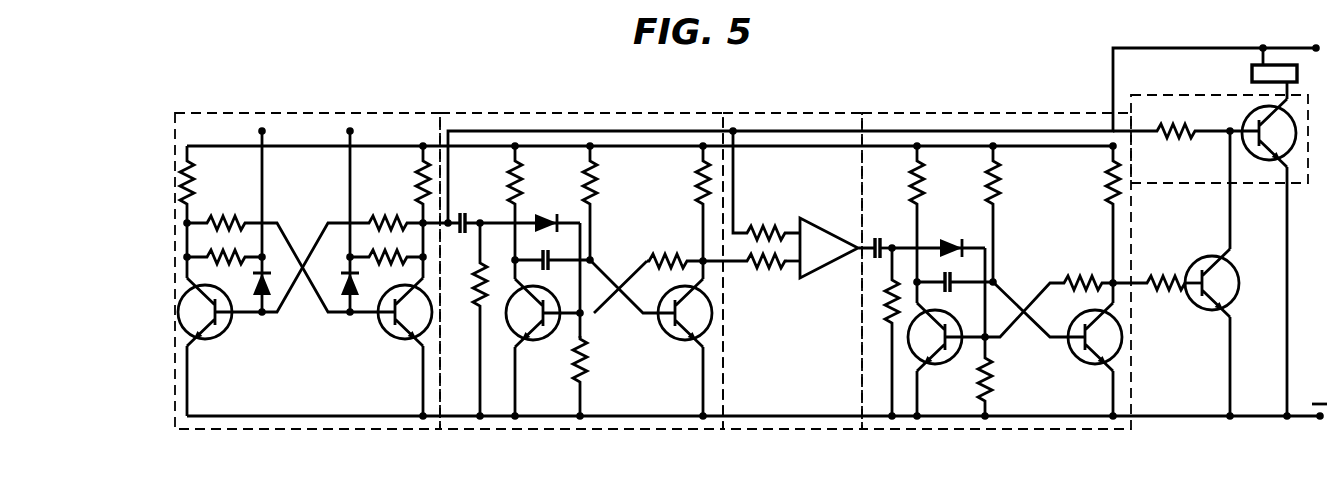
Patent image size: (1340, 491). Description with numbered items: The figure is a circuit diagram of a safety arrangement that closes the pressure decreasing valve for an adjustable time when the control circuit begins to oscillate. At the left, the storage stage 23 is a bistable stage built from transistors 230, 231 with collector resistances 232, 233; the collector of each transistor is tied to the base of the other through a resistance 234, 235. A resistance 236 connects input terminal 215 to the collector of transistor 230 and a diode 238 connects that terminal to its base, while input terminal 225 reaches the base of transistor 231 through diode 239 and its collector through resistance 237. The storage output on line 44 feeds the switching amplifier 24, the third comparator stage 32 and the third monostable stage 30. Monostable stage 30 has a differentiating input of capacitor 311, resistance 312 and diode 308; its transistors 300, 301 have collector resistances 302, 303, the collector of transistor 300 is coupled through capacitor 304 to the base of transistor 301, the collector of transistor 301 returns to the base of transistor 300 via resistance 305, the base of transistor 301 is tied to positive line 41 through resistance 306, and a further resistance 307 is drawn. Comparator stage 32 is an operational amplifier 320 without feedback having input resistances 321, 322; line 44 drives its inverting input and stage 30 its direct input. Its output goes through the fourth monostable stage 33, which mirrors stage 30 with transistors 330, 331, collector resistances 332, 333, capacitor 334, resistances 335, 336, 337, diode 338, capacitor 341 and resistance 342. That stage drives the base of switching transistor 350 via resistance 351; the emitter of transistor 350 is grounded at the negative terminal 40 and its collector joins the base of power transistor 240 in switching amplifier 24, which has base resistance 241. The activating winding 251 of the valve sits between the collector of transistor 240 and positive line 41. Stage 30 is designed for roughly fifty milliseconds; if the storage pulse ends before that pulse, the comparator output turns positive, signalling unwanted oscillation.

The storage stage 23 is at (302, 113).
The switching amplifier 24 is at (1292, 190).
The third monostable stage 30 is at (610, 120).
The third comparator stage 32 is at (780, 118).
The fourth monostable stage 33 is at (934, 118).
The negative supply terminal 40 is at (1310, 420).
The positive line 41 is at (1302, 48).
The line 44 is at (530, 131).
The input terminal 215 is at (262, 131).
The input terminal 225 is at (350, 131).
The transistor 230 is at (202, 336).
The transistor 231 is at (397, 338).
The collector resistance 232 is at (187, 178).
The collector resistance 233 is at (423, 178).
The resistance 234 is at (230, 218).
The resistance 235 is at (405, 218).
The resistance 236 is at (200, 258).
The resistance 237 is at (368, 296).
The diode 238 is at (280, 296).
The diode 239 is at (340, 282).
The power transistor 240 is at (1256, 118).
The base resistance 241 is at (1178, 140).
The activating winding 251 is at (1252, 75).
The transistor 300 is at (527, 338).
The transistor 301 is at (712, 330).
The collector resistance 302 is at (515, 182).
The collector resistance 303 is at (712, 172).
The capacitor 304 is at (553, 256).
The resistance 305 is at (680, 246).
The resistance 306 is at (597, 186).
The resistance 307 is at (586, 362).
The diode 308 is at (546, 214).
The capacitor 311 is at (486, 200).
The resistance 312 is at (474, 302).
The operational amplifier 320 is at (842, 272).
The input resistance 321 is at (771, 270).
The input resistance 322 is at (766, 226).
The transistor 330 is at (931, 364).
The transistor 331 is at (1091, 364).
The collector resistance 332 is at (915, 182).
The collector resistance 333 is at (1108, 190).
The capacitor 334 is at (955, 278).
The resistance 335 is at (1080, 278).
The resistance 336 is at (997, 184).
The resistance 337 is at (992, 376).
The diode 338 is at (951, 238).
The capacitor 341 is at (880, 234).
The resistance 342 is at (886, 302).
The switching transistor 350 is at (1216, 306).
The resistance 351 is at (1161, 278).